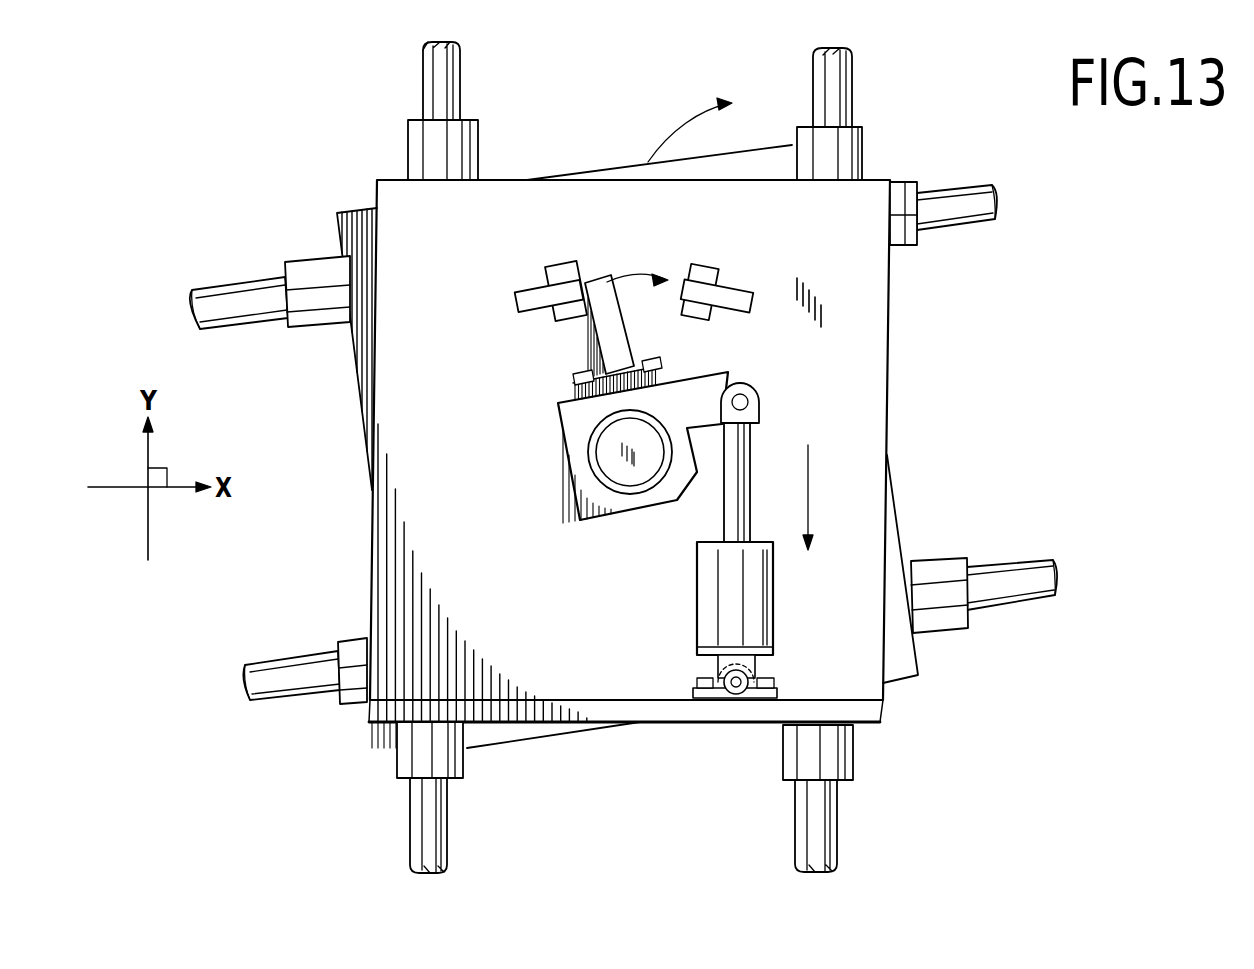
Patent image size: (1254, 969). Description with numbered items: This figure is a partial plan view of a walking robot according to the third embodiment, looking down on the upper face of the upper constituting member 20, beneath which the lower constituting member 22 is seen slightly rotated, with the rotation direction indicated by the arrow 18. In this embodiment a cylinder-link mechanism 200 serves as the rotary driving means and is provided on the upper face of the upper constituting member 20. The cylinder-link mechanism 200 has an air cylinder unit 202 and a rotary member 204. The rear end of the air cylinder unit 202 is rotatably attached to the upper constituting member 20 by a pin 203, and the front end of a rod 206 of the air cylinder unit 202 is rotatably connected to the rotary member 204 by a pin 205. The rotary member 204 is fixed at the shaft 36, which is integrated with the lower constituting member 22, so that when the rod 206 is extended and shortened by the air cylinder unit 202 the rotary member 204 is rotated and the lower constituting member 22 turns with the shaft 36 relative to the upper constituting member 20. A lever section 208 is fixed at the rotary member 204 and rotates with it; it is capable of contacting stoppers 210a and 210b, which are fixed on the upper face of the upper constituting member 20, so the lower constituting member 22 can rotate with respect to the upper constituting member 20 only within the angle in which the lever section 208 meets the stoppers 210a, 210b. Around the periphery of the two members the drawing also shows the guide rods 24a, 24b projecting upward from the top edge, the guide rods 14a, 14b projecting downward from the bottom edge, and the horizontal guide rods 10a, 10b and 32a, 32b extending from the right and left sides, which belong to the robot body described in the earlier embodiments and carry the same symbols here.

The guide rod 10a is at (1000, 205).
The guide rod 10b is at (250, 690).
The guide rod 14a is at (835, 842).
The guide rod 14b is at (415, 822).
The rotation direction 18 is at (904, 463).
The upper constituting member 20 is at (582, 688).
The lower constituting member 22 is at (355, 370).
The guide rod 24a is at (850, 160).
The guide rod 24b is at (415, 155).
The guide rod 32a is at (955, 625).
The guide rod 32b is at (305, 265).
The shaft 36 is at (614, 455).
The cylinder-link mechanism 200 is at (701, 526).
The air cylinder unit 202 is at (707, 605).
The pin 203 is at (738, 690).
The rotary member 204 is at (568, 500).
The pin 205 is at (742, 402).
The rod 206 is at (748, 465).
The lever section 208 is at (622, 345).
The stopper 210a is at (550, 275).
The stopper 210b is at (725, 277).